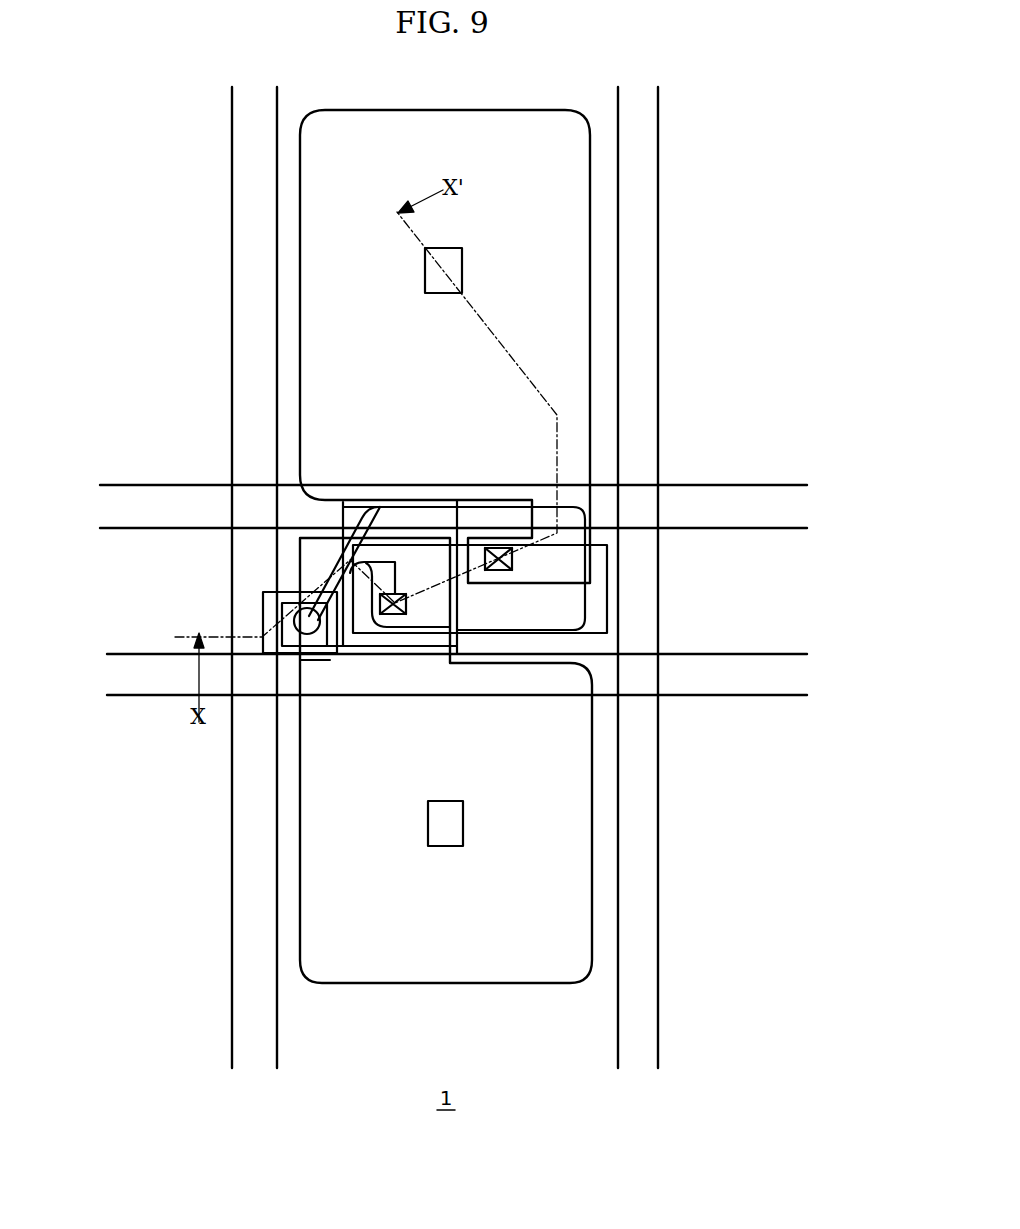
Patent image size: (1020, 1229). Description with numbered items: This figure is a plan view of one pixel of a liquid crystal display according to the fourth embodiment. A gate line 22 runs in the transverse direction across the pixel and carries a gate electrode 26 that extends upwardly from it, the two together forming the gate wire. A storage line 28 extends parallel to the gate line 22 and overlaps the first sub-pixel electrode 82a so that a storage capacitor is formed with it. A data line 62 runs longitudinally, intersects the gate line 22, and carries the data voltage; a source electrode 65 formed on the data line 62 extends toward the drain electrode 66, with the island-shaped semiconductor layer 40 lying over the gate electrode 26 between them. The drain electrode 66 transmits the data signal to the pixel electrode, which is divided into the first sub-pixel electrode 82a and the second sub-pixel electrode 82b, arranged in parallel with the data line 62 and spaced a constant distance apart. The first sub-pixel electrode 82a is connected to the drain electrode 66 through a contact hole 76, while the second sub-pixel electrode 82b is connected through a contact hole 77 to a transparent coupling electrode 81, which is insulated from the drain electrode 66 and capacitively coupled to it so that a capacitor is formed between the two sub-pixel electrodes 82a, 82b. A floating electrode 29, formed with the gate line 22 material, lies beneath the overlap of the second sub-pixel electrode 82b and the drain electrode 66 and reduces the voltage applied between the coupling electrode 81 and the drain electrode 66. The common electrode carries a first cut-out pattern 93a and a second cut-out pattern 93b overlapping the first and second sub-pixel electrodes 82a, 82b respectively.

The gate line 22 is at (145, 695).
The gate electrode 26 is at (263, 599).
The storage line 28 is at (722, 485).
The floating electrode 29 is at (607, 590).
The semiconductor layer 40 is at (282, 622).
The data line 62 is at (232, 322).
The source electrode 65 is at (305, 622).
The drain electrode 66 is at (305, 660).
The contact hole 76 is at (512, 551).
The contact hole 77 is at (457, 597).
The coupling electrode 81 is at (343, 528).
The first sub-pixel electrode 82a is at (591, 255).
The second sub-pixel electrode 82b is at (592, 768).
The first cut-out pattern 93a is at (445, 248).
The second cut-out pattern 93b is at (438, 846).